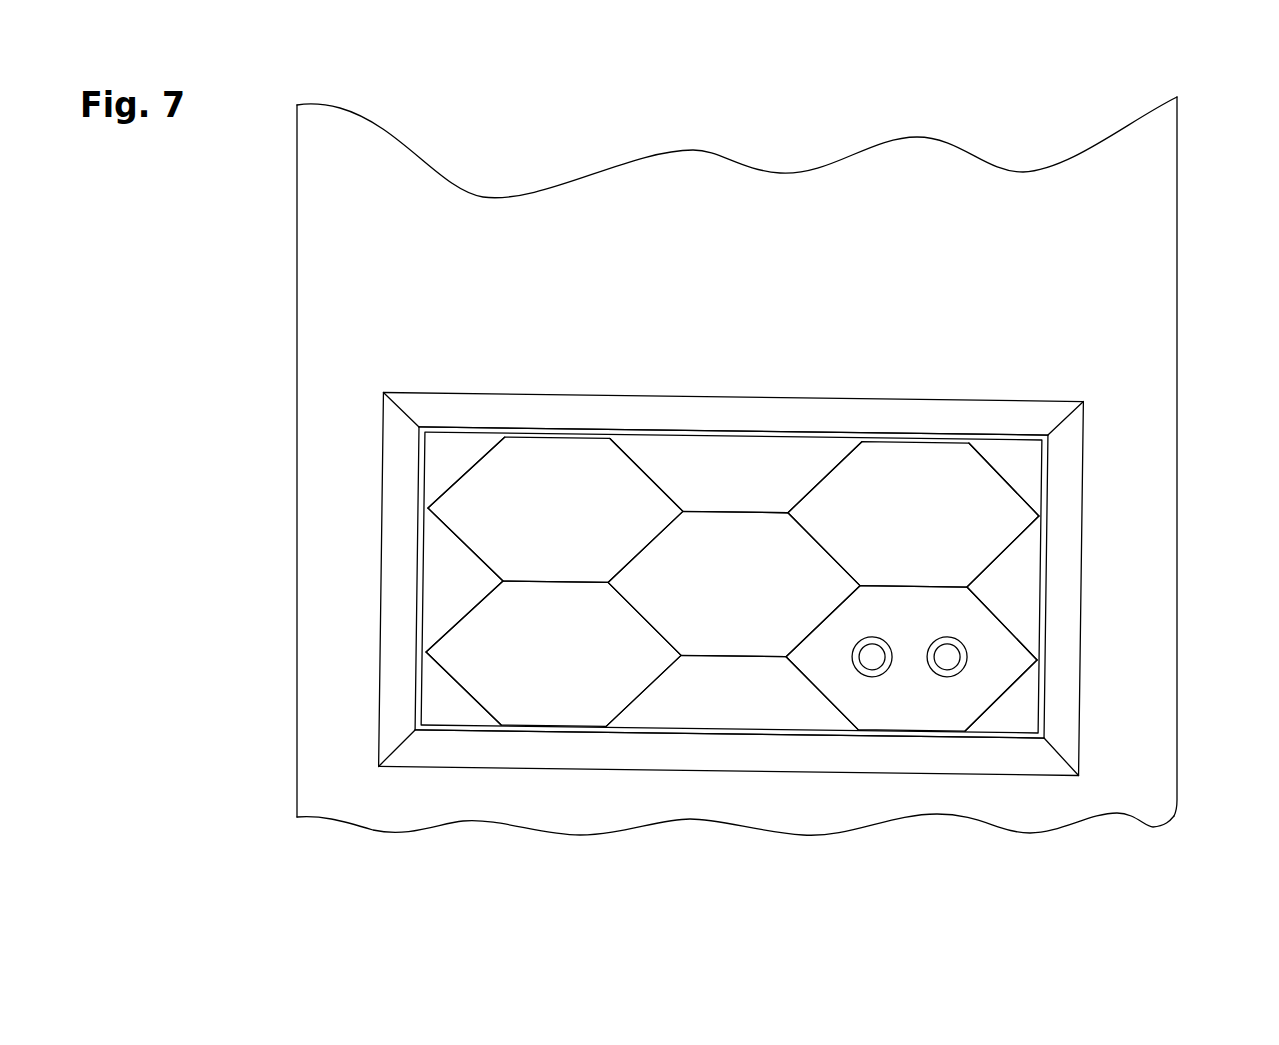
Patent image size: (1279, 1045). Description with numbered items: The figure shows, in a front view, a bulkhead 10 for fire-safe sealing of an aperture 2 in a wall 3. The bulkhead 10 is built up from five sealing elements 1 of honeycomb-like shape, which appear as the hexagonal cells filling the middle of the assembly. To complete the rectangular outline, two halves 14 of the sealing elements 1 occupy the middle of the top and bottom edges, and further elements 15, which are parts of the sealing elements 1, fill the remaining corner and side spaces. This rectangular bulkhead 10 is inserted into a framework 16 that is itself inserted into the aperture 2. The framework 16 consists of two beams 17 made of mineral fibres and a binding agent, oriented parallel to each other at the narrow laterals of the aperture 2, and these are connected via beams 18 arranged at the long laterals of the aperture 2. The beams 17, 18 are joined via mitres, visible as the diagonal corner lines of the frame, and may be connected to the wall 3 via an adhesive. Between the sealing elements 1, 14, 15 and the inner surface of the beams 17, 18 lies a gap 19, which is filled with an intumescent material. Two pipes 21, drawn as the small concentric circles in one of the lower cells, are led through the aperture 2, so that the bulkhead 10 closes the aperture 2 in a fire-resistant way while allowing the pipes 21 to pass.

The sealing element 1 is at (553, 450).
The aperture 2 is at (736, 596).
The wall 3 is at (1150, 208).
The bulkhead 10 is at (737, 596).
The half of a sealing element 14 is at (808, 462).
The part element 15 is at (452, 448).
The framework 16 is at (380, 467).
The beam 17 is at (400, 540).
The beam 18 is at (655, 415).
The gap 19 is at (928, 439).
The pipe 21 is at (856, 672).